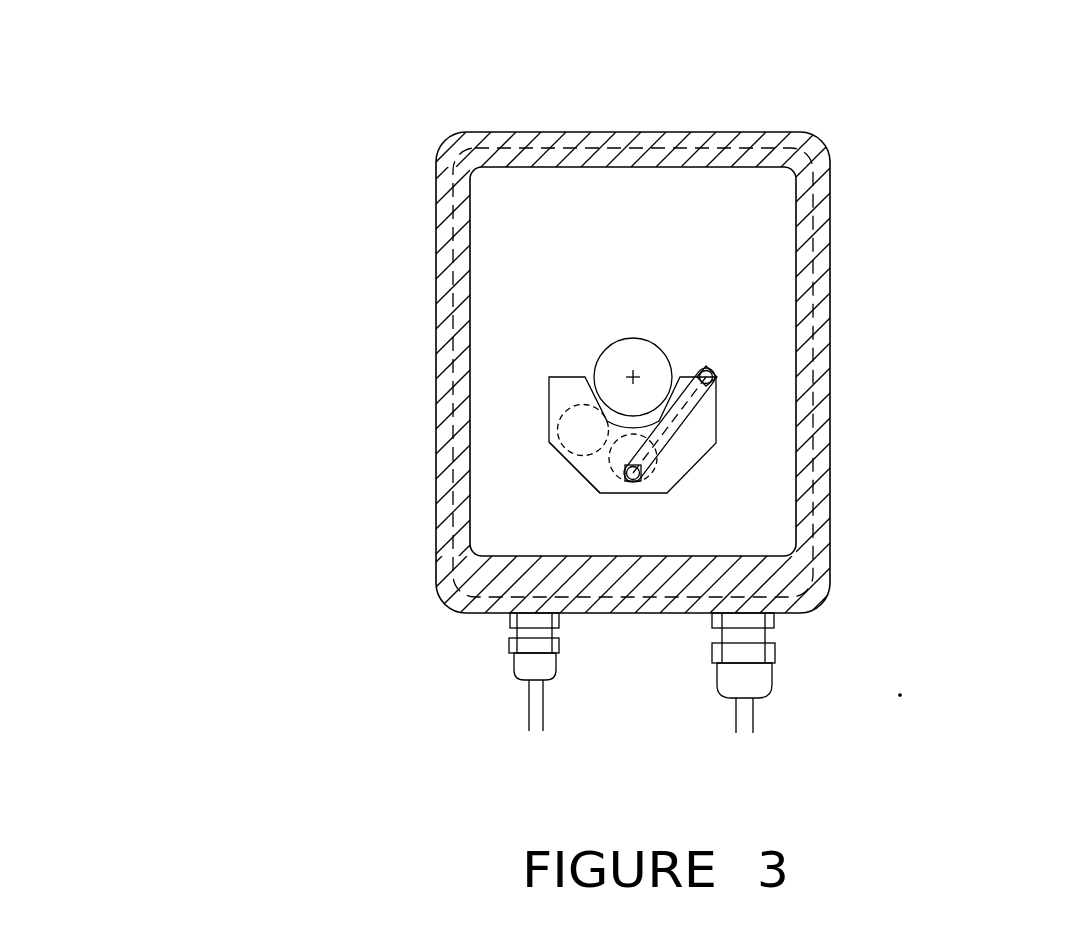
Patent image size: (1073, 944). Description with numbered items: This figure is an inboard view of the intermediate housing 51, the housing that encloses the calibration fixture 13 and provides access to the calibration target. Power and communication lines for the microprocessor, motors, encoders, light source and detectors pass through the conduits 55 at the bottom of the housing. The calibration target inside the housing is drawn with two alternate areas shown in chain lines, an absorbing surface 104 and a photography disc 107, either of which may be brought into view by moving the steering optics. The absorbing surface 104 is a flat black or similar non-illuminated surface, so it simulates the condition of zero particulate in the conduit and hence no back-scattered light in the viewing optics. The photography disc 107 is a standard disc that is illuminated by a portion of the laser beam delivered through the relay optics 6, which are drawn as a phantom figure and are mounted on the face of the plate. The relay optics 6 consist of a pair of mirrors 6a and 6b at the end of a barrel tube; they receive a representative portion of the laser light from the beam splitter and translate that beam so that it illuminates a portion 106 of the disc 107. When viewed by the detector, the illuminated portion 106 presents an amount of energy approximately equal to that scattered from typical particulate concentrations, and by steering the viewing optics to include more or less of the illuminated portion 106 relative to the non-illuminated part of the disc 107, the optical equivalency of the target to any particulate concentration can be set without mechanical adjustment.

The intermediate housing 51 is at (613, 132).
The conduits 55 is at (530, 710).
The relay optics 6 is at (716, 397).
The mirror 6a is at (715, 373).
The mirror 6b is at (636, 485).
The absorbing surface 104 is at (558, 422).
The calibration fixture 13 is at (560, 452).
The illuminated portion 106 is at (620, 477).
The photography disc 107 is at (657, 472).